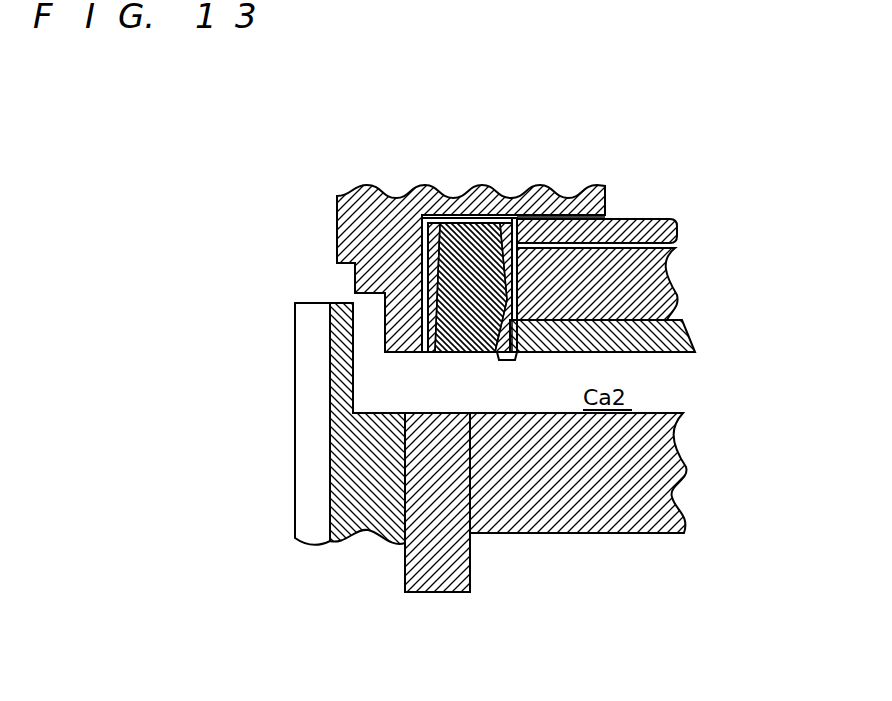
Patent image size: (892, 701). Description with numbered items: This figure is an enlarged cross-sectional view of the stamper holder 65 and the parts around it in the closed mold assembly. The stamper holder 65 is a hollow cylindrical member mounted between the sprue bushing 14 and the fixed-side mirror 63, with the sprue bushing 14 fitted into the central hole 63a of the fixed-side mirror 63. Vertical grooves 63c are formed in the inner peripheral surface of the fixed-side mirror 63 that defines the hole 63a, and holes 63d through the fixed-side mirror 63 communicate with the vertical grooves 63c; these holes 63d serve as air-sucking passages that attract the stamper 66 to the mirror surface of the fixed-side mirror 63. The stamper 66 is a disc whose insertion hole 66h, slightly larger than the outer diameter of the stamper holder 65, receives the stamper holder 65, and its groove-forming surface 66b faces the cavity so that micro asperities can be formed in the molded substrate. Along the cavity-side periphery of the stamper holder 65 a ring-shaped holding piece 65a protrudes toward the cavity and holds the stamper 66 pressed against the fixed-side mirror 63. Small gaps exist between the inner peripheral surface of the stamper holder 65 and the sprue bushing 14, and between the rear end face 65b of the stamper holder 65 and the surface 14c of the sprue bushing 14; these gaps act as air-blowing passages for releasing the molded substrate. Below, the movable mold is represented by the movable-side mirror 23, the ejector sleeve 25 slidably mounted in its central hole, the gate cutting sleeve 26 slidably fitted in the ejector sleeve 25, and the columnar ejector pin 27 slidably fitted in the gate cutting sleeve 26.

The sprue bushing 14 is at (590, 182).
The surface of the sprue bushing 14c is at (438, 354).
The movable-side mirror 23 is at (540, 520).
The ejector sleeve 25 is at (453, 592).
The gate cutting sleeve 26 is at (377, 527).
The ejector pin 27 is at (310, 537).
The fixed-side mirror 63 is at (658, 227).
The hole 63a is at (498, 213).
The vertical grooves 63c is at (533, 213).
The holes 63d is at (676, 247).
The stamper holder 65 is at (452, 198).
The holding piece 65a is at (505, 358).
The end face of the stamper holder 65b is at (458, 217).
The stamper 66 is at (660, 337).
The groove-forming surface 66b is at (615, 355).
The insertion hole 66h is at (463, 358).